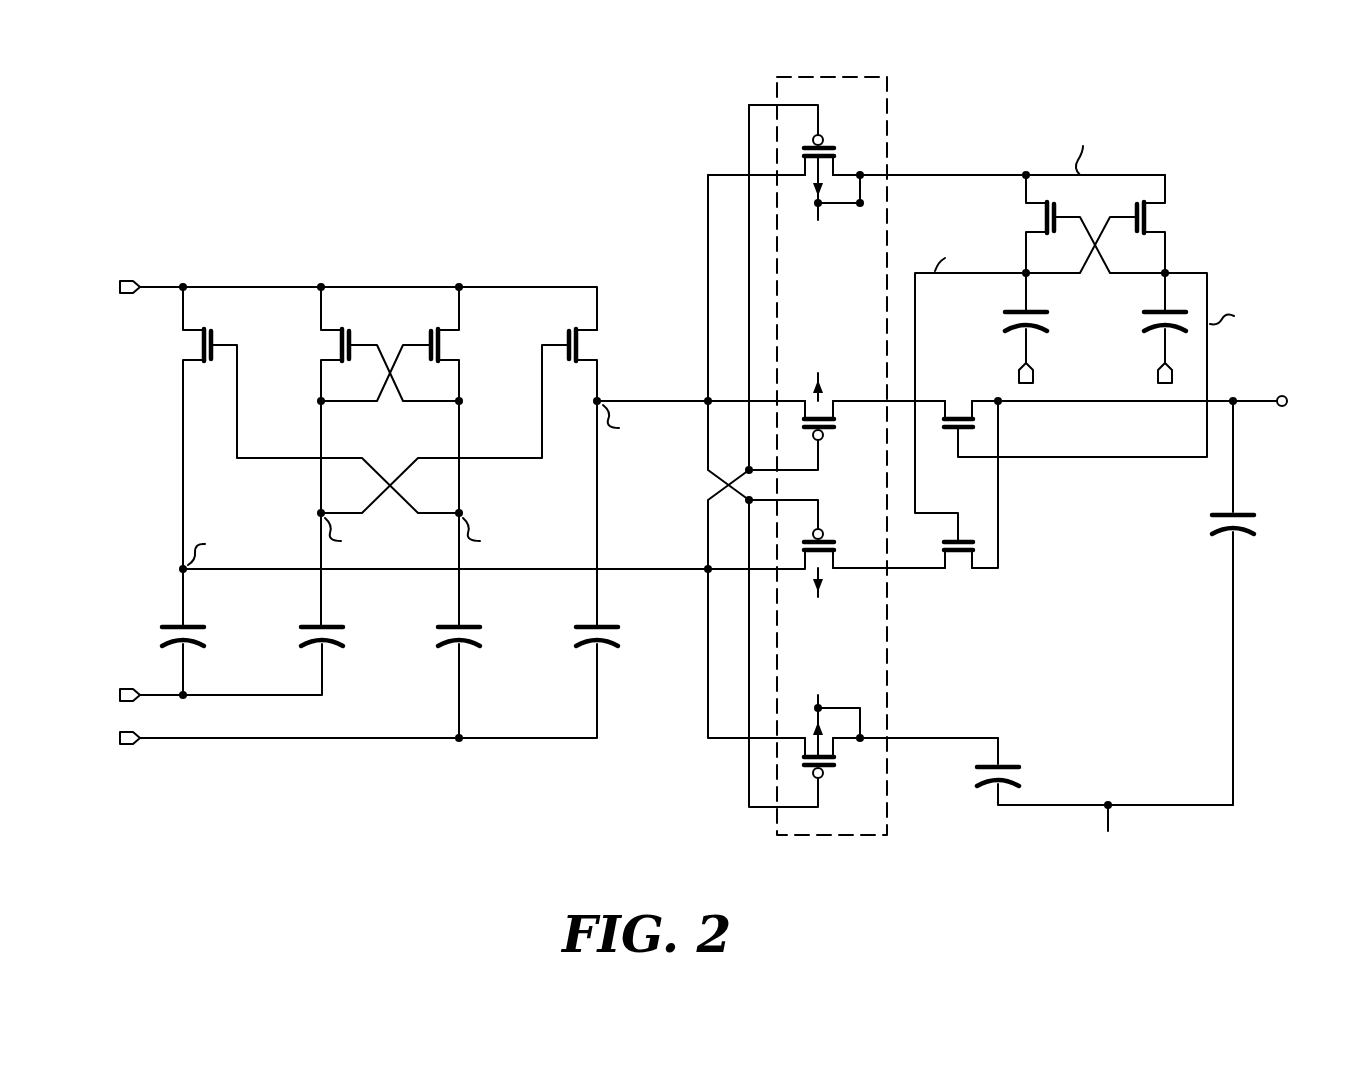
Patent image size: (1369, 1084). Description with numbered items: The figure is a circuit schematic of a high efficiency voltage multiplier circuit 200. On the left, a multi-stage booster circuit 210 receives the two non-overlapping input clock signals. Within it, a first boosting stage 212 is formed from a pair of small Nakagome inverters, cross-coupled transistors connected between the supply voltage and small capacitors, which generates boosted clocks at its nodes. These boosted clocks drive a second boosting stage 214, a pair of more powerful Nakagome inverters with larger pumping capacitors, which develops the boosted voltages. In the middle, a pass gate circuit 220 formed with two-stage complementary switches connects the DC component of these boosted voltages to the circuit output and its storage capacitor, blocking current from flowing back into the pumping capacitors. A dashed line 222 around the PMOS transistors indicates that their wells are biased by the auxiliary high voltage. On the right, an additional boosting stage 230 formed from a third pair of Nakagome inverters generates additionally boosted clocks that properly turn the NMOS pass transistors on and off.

The voltage multiplier circuit 200 is at (209, 152).
The multi-stage booster circuit 210 is at (595, 240).
The first boosting stage 212 is at (465, 263).
The second boosting stage 214 is at (206, 268).
The pass gate circuit 220 is at (708, 815).
The dashed line 222 is at (890, 129).
The additional boosting stage 230 is at (1214, 150).